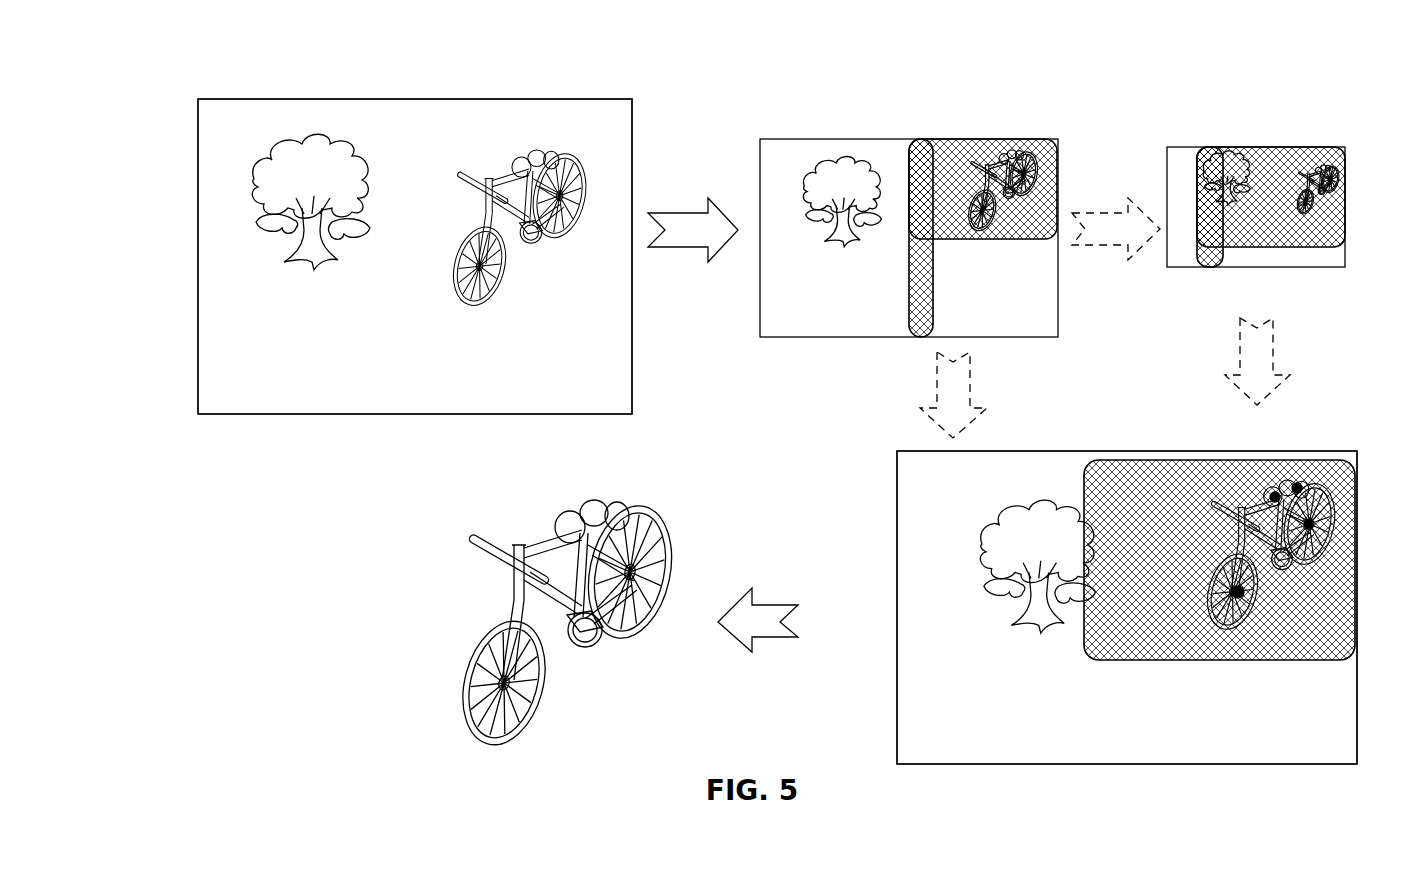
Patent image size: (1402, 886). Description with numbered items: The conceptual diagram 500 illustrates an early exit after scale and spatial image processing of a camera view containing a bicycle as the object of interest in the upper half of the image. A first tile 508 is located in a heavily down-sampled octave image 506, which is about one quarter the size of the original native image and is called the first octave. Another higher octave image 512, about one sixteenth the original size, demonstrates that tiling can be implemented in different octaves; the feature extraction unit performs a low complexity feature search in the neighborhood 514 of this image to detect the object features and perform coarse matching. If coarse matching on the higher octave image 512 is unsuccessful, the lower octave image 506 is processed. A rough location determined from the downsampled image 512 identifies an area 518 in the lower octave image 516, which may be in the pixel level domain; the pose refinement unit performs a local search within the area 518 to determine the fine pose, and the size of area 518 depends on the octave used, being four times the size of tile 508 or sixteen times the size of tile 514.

The conceptual diagram 500 is at (317, 76).
The heavily down-sampled octave image 506 is at (815, 139).
The first tile 508 is at (997, 240).
The second octave image 512 is at (1233, 147).
The neighborhood 514 is at (1302, 250).
The lower octave image 516 is at (1182, 458).
The area 518 is at (1197, 663).